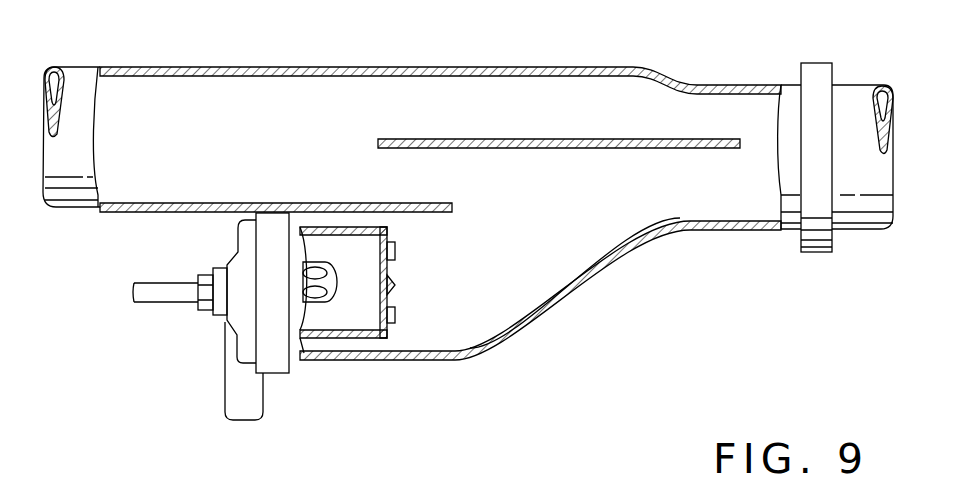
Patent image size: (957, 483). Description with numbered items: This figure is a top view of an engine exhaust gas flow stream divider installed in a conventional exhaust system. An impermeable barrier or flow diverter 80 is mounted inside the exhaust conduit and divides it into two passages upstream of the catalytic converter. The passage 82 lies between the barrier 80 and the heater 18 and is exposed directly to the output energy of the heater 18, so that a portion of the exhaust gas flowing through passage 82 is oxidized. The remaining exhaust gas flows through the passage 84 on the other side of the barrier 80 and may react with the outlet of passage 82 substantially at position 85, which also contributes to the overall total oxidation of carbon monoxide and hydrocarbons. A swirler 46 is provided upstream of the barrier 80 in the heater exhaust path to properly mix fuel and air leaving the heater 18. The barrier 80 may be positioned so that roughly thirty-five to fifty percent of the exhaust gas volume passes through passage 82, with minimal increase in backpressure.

The heater 18 is at (280, 357).
The swirler 46 is at (377, 282).
The barrier 80 is at (463, 139).
The passage 82 is at (477, 282).
The passage 84 is at (605, 102).
The position 85 is at (765, 145).